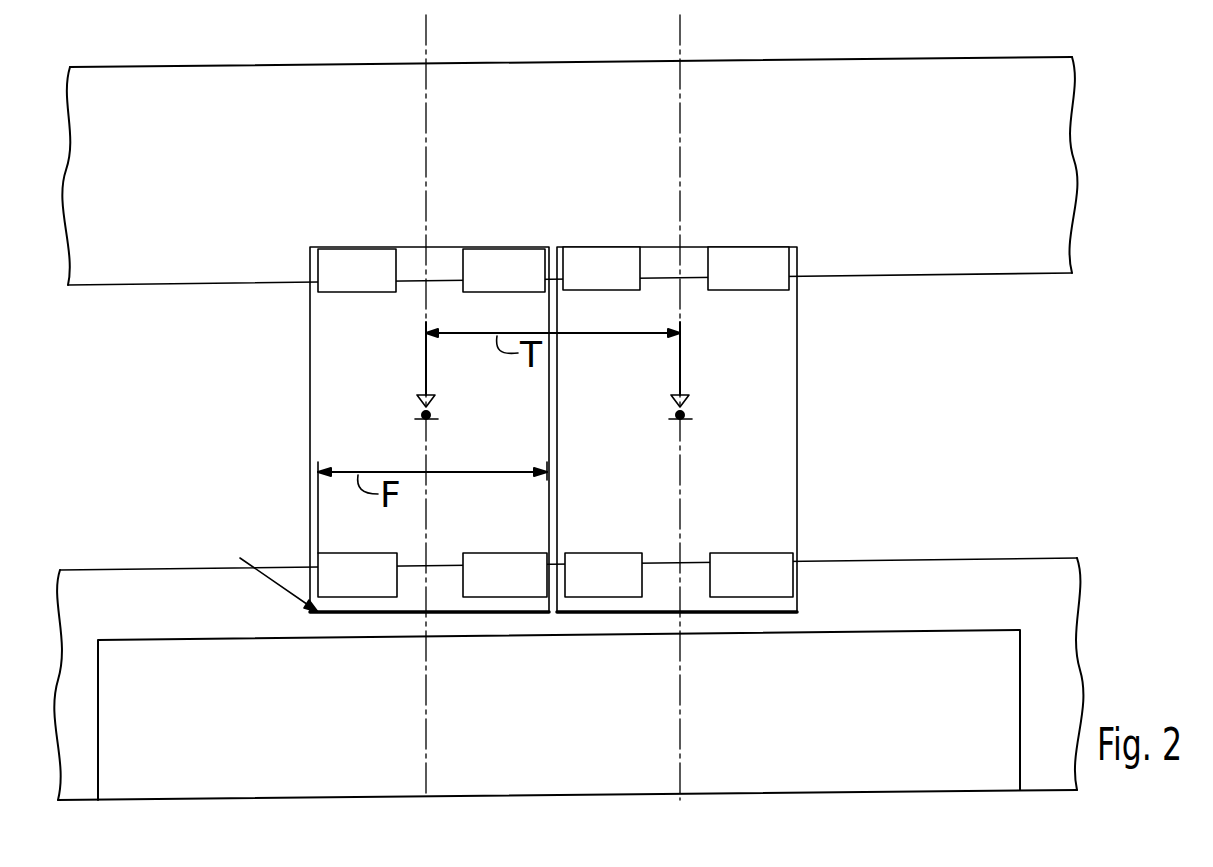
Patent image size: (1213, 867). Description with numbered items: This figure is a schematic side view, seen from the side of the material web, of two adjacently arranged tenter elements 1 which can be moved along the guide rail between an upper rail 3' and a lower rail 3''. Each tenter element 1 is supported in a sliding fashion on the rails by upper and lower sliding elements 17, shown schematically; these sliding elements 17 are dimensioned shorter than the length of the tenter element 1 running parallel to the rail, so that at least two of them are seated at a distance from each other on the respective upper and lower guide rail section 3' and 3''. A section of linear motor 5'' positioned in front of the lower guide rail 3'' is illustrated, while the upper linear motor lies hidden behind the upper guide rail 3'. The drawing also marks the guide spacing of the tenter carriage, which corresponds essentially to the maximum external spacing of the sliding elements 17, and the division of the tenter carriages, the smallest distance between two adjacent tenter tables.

The tenter element 1 is at (323, 413).
The sliding elements 17 is at (487, 262).
The upper guide rail section 3' is at (569, 171).
The lower guide rail section 3'' is at (602, 679).
The linear motor 5'' is at (559, 715).